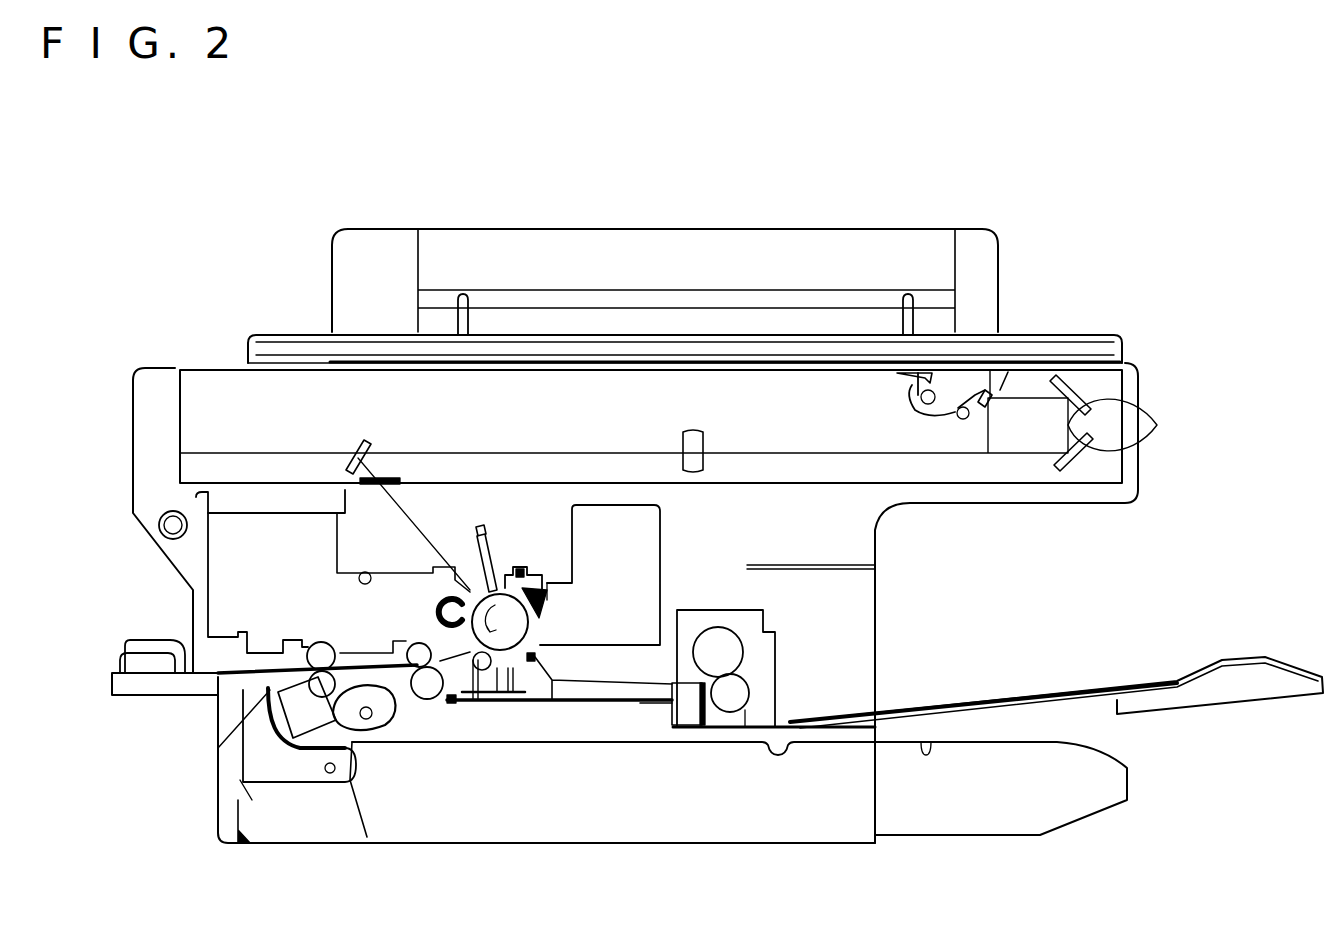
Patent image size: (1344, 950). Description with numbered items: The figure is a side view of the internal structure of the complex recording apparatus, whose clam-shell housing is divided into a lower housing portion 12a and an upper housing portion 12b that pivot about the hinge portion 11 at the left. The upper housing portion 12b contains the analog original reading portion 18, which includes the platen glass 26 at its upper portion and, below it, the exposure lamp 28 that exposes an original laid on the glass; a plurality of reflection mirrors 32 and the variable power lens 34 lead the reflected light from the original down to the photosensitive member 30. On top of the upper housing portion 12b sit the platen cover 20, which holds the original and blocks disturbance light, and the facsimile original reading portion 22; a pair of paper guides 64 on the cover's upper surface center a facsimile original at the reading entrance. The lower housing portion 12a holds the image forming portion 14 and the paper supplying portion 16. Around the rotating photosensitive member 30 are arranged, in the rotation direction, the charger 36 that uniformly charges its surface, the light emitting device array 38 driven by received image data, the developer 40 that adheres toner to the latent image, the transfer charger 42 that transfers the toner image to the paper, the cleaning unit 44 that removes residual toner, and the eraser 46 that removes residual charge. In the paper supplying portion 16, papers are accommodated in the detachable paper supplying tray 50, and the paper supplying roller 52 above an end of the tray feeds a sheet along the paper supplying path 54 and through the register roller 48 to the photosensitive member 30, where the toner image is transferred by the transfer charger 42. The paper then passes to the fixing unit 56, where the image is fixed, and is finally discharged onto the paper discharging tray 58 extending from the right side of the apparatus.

The hinge portion 11 is at (158, 522).
The lower housing portion 12a is at (878, 668).
The upper housing portion 12b is at (1140, 362).
The image forming portion 14 is at (852, 613).
The paper supplying portion 16 is at (1170, 790).
The analog original reading portion 18 is at (1182, 486).
The platen cover 20 is at (1068, 332).
The facsimile original reading portion 22 is at (730, 228).
The platen glass 26 is at (630, 370).
The exposure lamp 28 is at (915, 412).
The photosensitive member 30 is at (515, 636).
The reflection mirrors 32 is at (366, 440).
The variable power lens 34 is at (700, 430).
The charger 36 is at (530, 565).
The light emitting device array 38 is at (484, 575).
The developer 40 is at (320, 562).
The transfer charger 42 is at (500, 702).
The cleaning unit 44 is at (655, 547).
The eraser 46 is at (546, 607).
The register roller 48 is at (427, 695).
The paper supplying tray 50 is at (585, 843).
The paper supplying roller 52 is at (378, 725).
The paper supplying path 54 is at (367, 657).
The fixing unit 56 is at (705, 610).
The paper discharging tray 58 is at (1168, 680).
The paper guides 64 is at (463, 294).